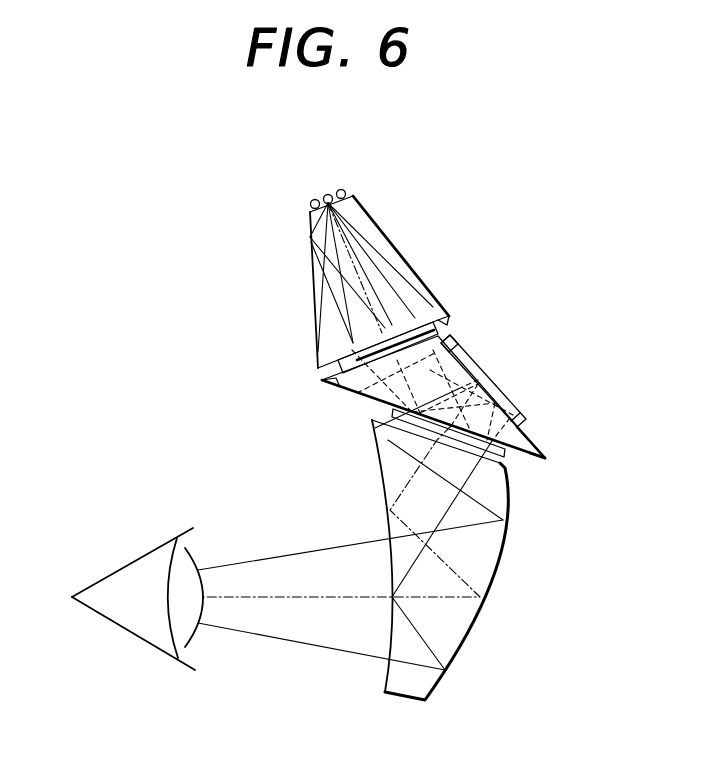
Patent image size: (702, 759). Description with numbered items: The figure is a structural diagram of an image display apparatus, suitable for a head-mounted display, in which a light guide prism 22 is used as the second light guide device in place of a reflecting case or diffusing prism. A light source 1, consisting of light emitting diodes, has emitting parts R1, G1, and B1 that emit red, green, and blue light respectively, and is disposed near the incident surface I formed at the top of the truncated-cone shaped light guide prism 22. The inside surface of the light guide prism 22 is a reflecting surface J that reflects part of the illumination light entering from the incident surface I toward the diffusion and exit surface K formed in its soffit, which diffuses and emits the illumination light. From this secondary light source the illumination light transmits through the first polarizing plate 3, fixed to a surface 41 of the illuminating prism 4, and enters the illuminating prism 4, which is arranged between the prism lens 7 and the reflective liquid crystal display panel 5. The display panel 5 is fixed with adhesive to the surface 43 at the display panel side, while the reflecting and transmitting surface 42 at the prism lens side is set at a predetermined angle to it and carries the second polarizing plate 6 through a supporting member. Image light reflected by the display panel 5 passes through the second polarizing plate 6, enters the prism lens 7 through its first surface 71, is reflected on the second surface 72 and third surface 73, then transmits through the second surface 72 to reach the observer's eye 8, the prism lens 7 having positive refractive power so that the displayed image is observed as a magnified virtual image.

The light source 1 is at (321, 157).
The emitting part R1 is at (311, 203).
The emitting part G1 is at (327, 195).
The emitting part B1 is at (361, 170).
The incident surface I is at (349, 197).
The reflecting surface J is at (384, 235).
The light guide prism 22 is at (388, 263).
The diffusion and exit surface K is at (440, 320).
The first polarizing plate 3 is at (452, 332).
The surface 41 is at (326, 382).
The illuminating prism 4 is at (463, 409).
The reflecting and transmitting surface 42 is at (348, 397).
The transmitting surface 43 is at (543, 453).
The reflective liquid crystal display panel 5 is at (512, 395).
The second polarizing plate 6 is at (505, 452).
The prism lens 7 is at (369, 555).
The first surface 71 is at (381, 440).
The second surface 72 is at (383, 676).
The third surface 73 is at (430, 698).
The observer's eye 8 is at (118, 625).